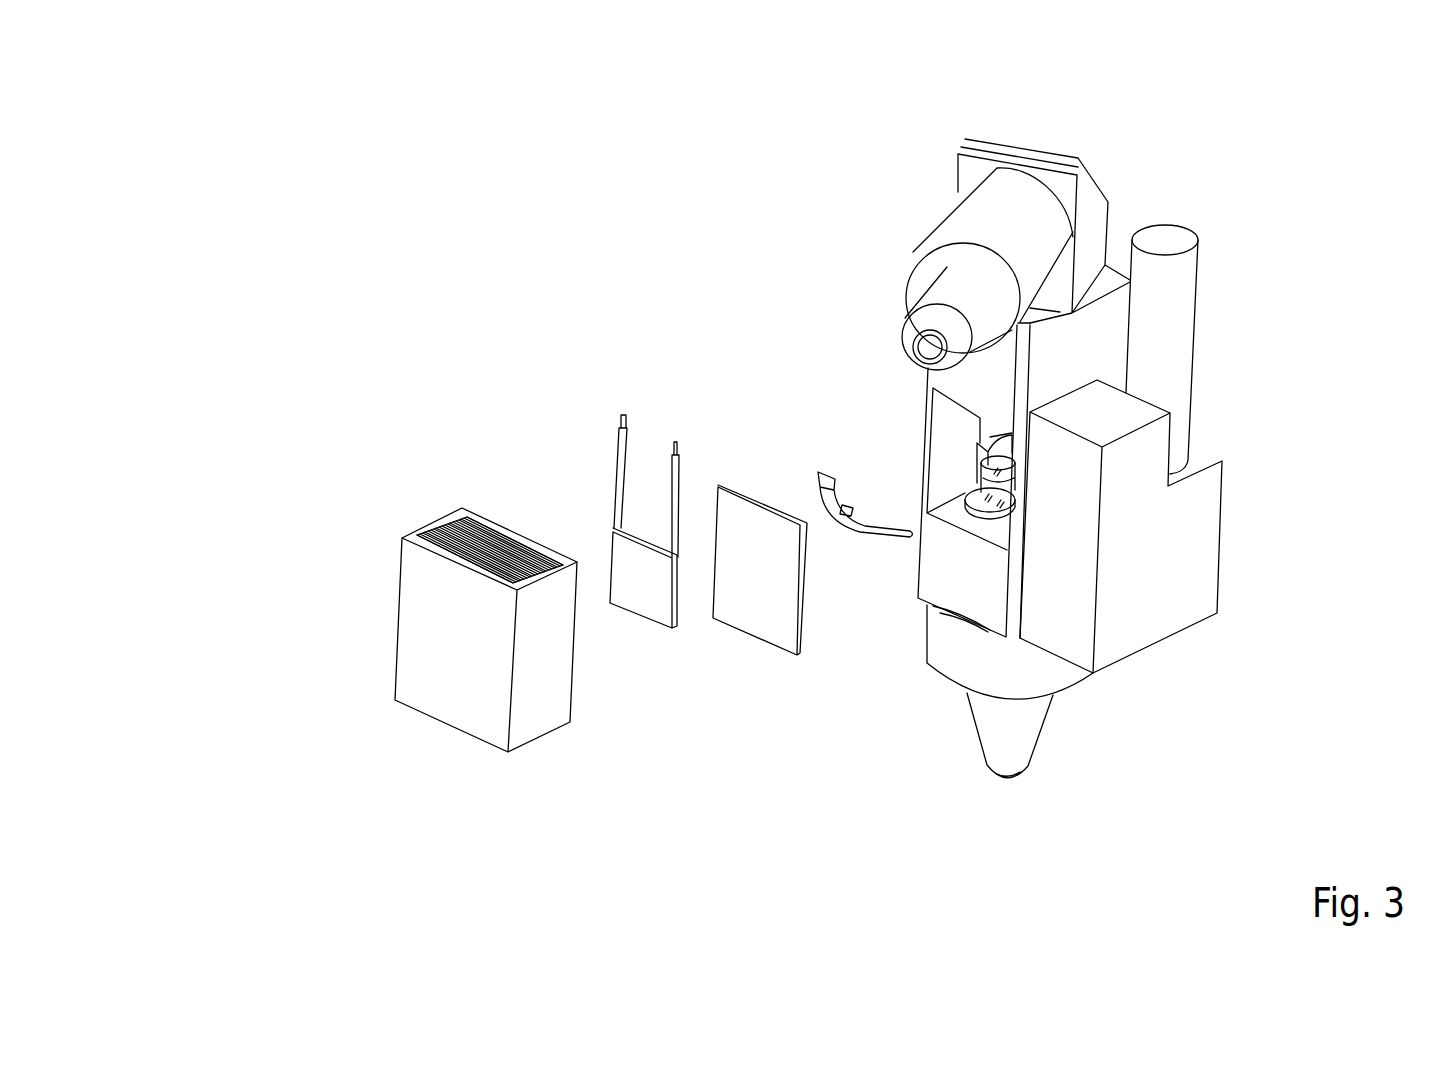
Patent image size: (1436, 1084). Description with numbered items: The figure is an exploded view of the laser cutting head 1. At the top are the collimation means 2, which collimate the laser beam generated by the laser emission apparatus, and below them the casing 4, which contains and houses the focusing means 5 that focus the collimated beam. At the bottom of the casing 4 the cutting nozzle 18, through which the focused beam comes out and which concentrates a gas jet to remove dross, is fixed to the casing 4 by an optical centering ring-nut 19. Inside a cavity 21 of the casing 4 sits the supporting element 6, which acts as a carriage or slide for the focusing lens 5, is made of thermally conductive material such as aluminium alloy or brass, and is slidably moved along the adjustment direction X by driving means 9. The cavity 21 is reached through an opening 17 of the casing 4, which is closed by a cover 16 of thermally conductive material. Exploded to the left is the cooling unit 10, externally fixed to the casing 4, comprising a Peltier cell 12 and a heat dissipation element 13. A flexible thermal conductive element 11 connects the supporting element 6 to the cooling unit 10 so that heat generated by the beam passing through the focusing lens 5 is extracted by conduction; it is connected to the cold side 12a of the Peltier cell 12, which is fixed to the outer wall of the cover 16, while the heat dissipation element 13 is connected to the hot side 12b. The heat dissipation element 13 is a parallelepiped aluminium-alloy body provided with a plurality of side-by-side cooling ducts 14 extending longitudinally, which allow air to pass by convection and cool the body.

The laser cutting head 1 is at (806, 164).
The collimation means 2 is at (1023, 205).
The casing 4 is at (1095, 338).
The focusing means 5 is at (1000, 487).
The supporting element 6 is at (977, 517).
The driving means 9 is at (1168, 602).
The cooling unit 10 is at (302, 599).
The thermal conductive connecting means 11 is at (820, 472).
The Peltier cell 12 is at (623, 545).
The cold side 12a is at (680, 600).
The hot side 12b is at (640, 602).
The heat dissipation element 13 is at (535, 715).
The cooling ducts 14 is at (448, 525).
The cover 16 is at (780, 607).
The opening 17 is at (926, 432).
The cutting nozzle 18 is at (1012, 748).
The optical centering ring-nut 19 is at (1043, 677).
The cavity 21 is at (993, 427).